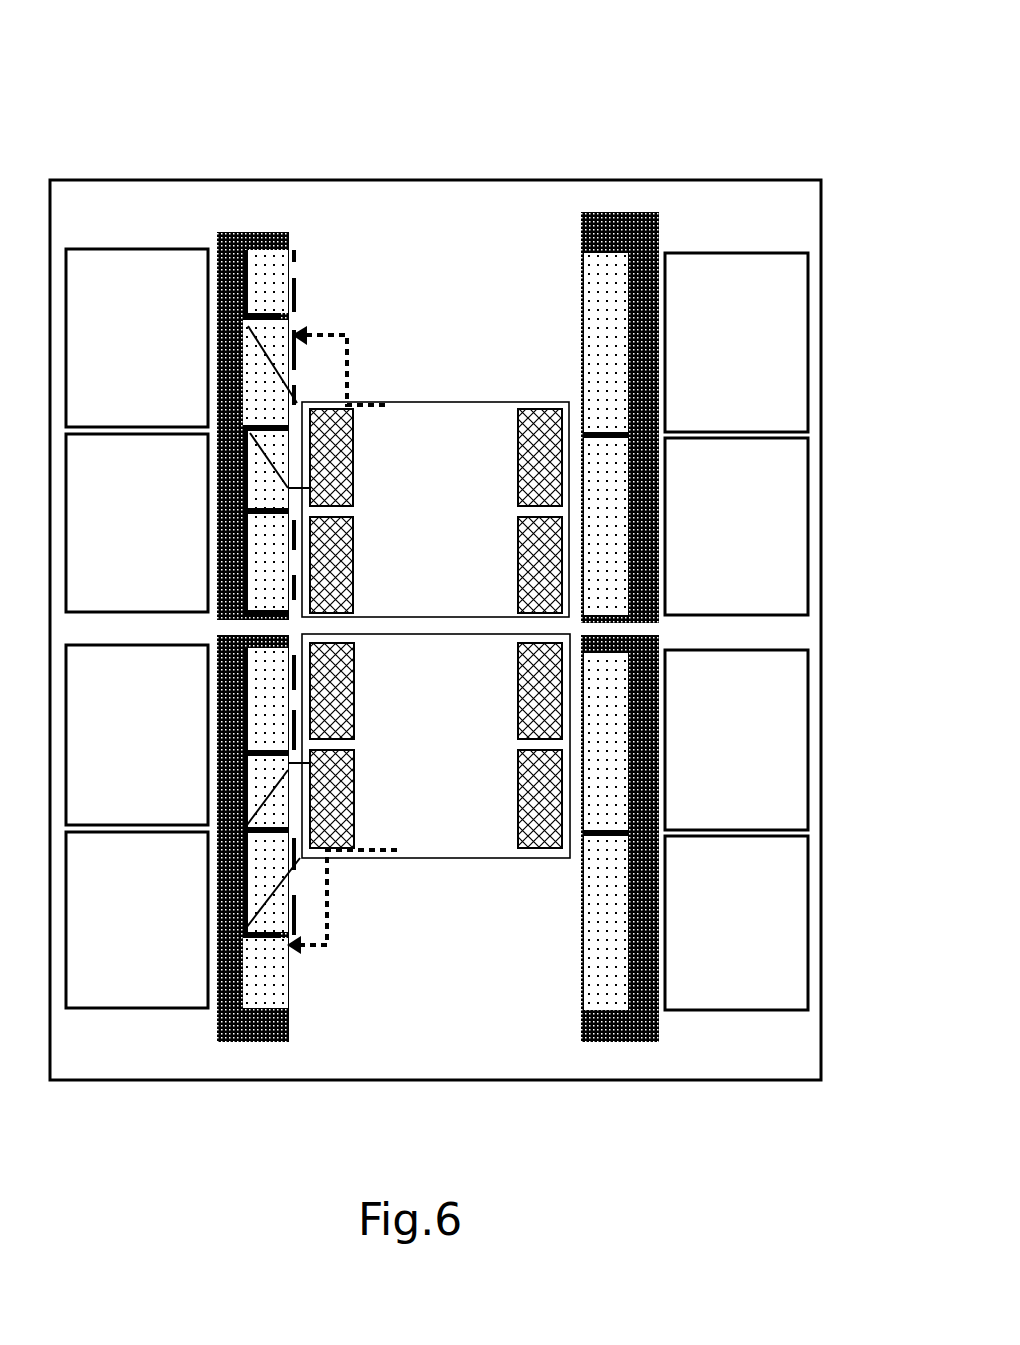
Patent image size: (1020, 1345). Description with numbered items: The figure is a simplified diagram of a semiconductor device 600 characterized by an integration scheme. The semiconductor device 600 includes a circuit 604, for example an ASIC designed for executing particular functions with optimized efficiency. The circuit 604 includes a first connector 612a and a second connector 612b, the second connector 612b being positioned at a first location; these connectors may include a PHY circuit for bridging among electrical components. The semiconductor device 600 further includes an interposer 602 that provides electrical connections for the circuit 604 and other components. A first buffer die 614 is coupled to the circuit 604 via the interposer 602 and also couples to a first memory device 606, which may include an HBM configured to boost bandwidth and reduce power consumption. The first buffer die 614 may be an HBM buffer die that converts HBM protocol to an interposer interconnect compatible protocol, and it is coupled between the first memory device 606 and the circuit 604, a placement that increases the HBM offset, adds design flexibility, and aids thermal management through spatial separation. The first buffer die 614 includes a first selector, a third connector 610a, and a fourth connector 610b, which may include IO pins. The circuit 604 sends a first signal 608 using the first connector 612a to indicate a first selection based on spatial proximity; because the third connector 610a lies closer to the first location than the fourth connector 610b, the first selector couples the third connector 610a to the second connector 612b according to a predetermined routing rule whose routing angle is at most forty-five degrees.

The semiconductor device 600 is at (652, 106).
The interposer 602 is at (483, 1033).
The circuit 604 is at (470, 432).
The first memory device 606 is at (107, 290).
The first signal 608 is at (350, 358).
The third connector 610a is at (277, 337).
The fourth connector 610b is at (275, 262).
The first connector 612a is at (387, 407).
The second connector 612b is at (332, 490).
The first buffer die 614 is at (230, 232).